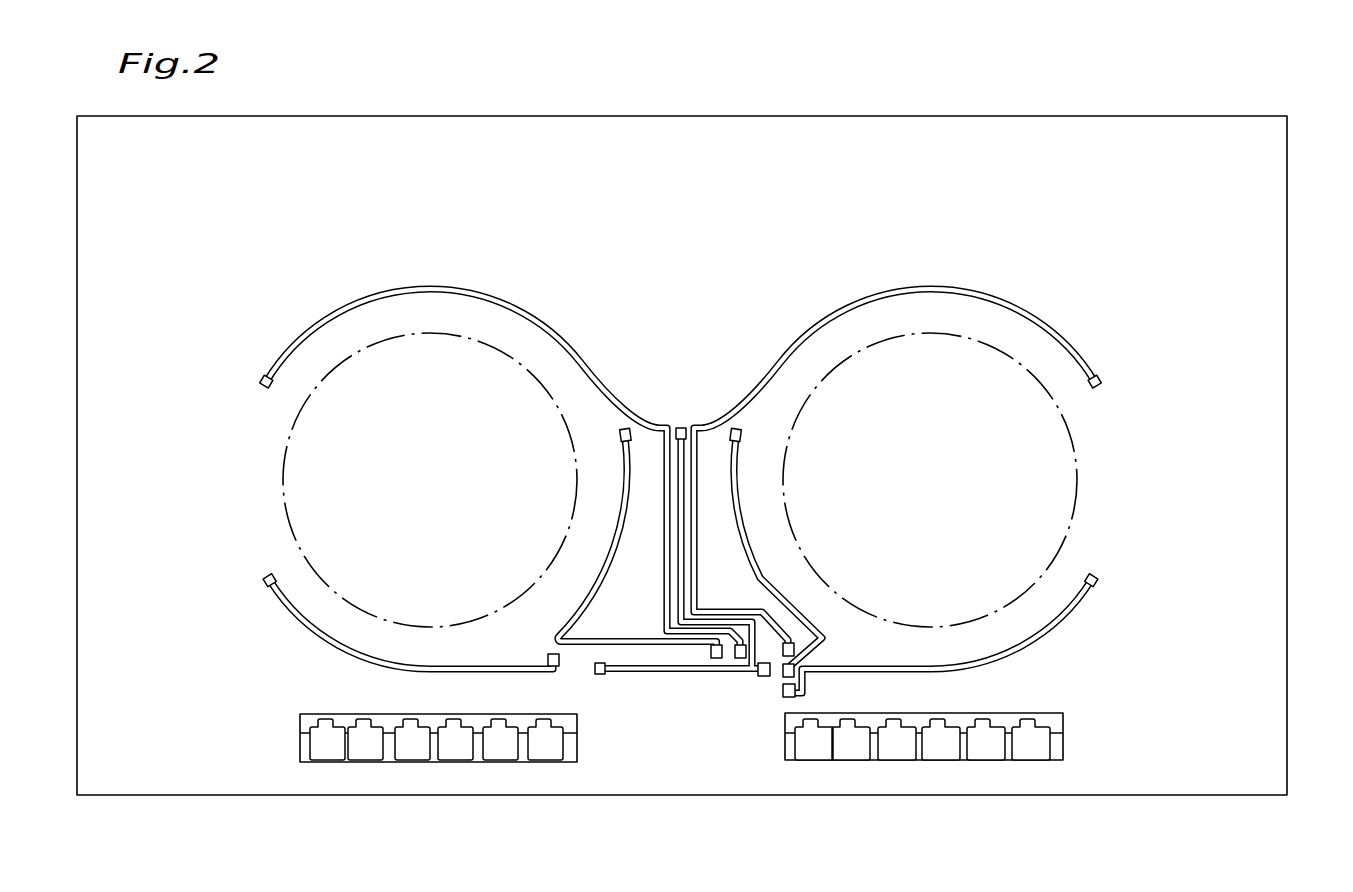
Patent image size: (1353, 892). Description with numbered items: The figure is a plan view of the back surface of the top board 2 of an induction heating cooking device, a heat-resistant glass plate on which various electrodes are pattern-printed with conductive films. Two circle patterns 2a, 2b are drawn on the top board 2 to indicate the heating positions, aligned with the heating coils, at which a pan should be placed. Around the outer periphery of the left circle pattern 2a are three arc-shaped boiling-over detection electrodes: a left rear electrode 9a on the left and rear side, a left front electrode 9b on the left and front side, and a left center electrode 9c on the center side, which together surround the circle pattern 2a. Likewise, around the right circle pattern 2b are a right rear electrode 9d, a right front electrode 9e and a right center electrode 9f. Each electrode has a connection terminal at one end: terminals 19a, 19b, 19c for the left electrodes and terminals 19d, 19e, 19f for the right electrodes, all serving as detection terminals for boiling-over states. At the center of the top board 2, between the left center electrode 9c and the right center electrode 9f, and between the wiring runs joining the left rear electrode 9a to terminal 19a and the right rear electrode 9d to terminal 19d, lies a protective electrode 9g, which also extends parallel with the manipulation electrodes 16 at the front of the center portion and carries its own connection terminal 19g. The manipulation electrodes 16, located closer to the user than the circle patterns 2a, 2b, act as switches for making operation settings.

The top board 2 is at (1284, 217).
The circle pattern 2a is at (500, 352).
The circle pattern 2b is at (1025, 367).
The left rear electrode 9a is at (317, 322).
The left front electrode 9b is at (290, 614).
The left center electrode 9c is at (622, 518).
The right rear electrode 9d is at (1013, 303).
The right front electrode 9e is at (1063, 618).
The right center electrode 9f is at (739, 518).
The protective electrode 9g is at (681, 428).
The connection terminal 19a is at (737, 652).
The connection terminal 19b is at (562, 658).
The connection terminal 19c is at (713, 652).
The connection terminal 19d is at (794, 650).
The connection terminal 19e is at (795, 692).
The connection terminal 19f is at (773, 677).
The connection terminal 19g is at (763, 674).
The manipulation electrodes 16 is at (320, 740).